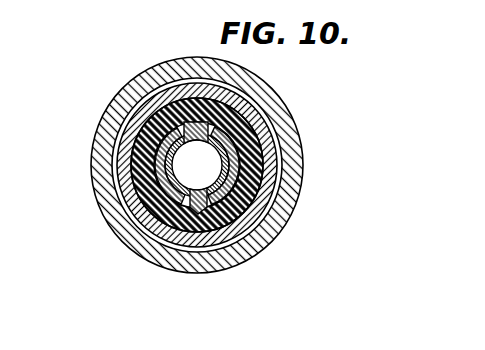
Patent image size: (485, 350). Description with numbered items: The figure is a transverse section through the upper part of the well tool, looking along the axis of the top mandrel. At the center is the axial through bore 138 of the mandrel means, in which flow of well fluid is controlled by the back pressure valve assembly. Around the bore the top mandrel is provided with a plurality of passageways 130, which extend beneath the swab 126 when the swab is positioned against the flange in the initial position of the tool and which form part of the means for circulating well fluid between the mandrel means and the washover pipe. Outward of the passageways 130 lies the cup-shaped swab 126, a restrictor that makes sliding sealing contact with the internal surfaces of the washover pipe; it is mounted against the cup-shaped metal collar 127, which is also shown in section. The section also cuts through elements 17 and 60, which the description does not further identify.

The outer housing ring 17 is at (108, 124).
The cup-shaped metal collar 127 is at (125, 152).
The passageways 130 is at (228, 195).
The axial through bore 138 is at (177, 171).
The swab 126 is at (233, 161).
The key 60 is at (199, 218).